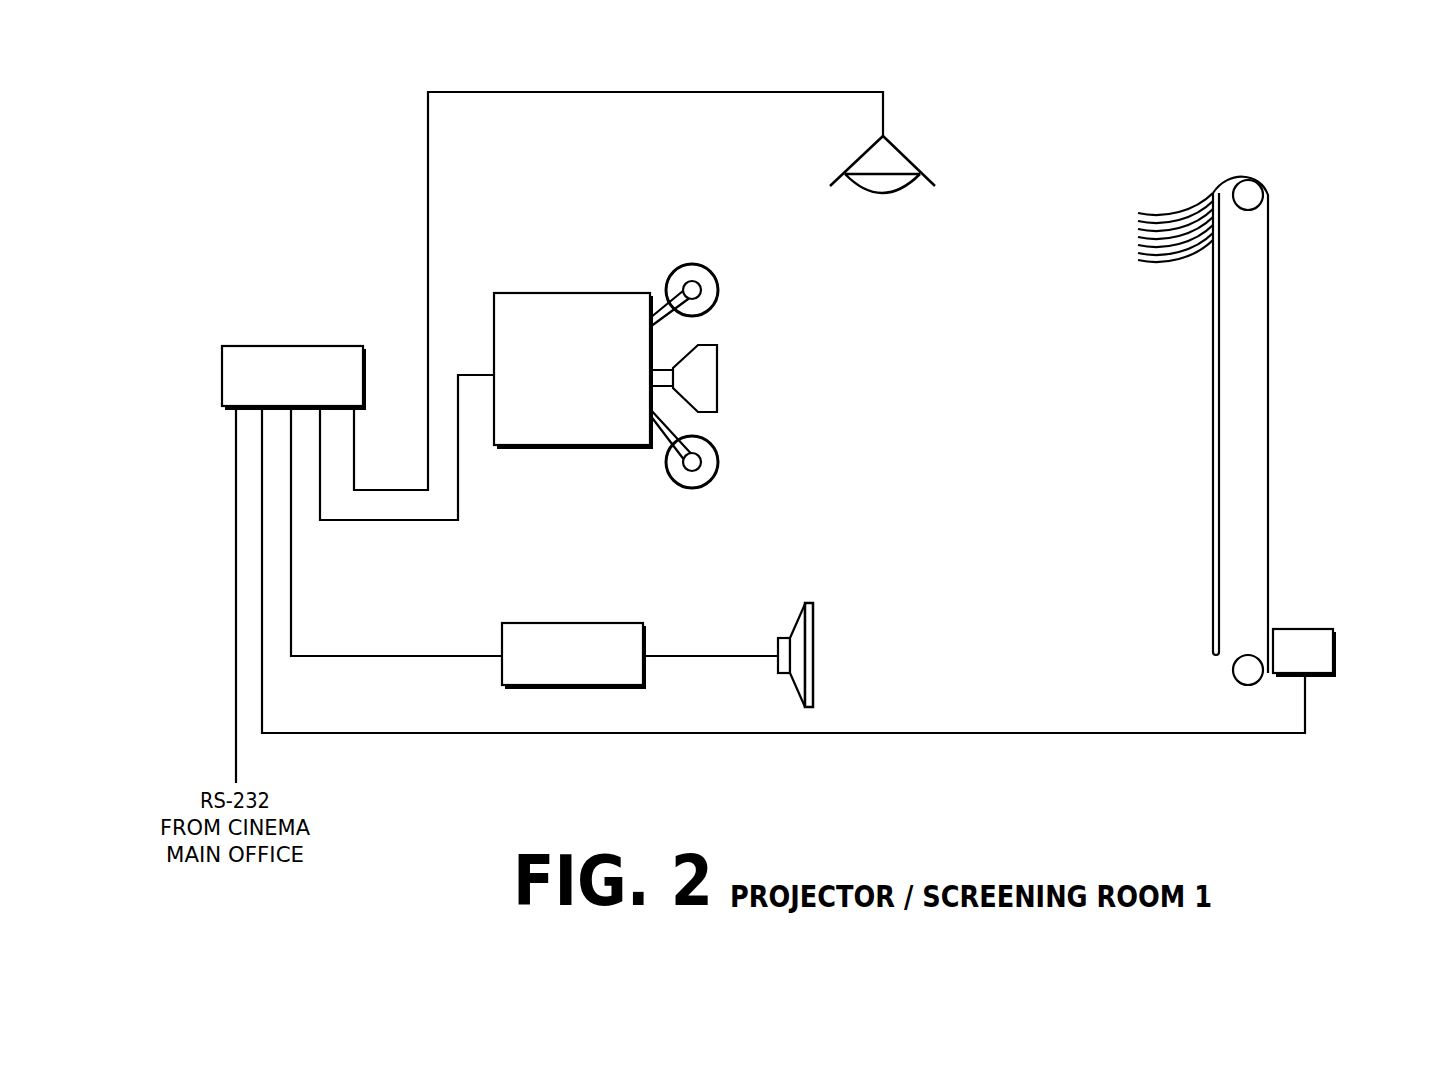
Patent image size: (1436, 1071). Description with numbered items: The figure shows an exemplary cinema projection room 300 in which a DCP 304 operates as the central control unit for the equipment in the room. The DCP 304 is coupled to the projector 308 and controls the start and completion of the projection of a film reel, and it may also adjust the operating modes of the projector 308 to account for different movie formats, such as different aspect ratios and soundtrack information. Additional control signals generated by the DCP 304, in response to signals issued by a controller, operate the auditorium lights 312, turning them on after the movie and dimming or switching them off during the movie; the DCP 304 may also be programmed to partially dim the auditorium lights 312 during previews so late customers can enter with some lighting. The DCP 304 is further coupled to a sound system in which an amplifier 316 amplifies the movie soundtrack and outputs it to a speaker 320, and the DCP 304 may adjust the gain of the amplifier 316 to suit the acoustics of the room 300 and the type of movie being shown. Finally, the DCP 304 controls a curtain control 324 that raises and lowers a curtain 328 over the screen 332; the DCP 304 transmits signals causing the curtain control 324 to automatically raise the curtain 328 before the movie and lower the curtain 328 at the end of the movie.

The projection room 300 is at (1190, 118).
The DCP 304 is at (320, 346).
The projector 308 is at (575, 293).
The auditorium lights 312 is at (925, 178).
The amplifier 316 is at (612, 627).
The speaker 320 is at (797, 622).
The curtain control 324 is at (1328, 658).
The curtain 328 is at (1180, 213).
The screen 332 is at (1212, 412).